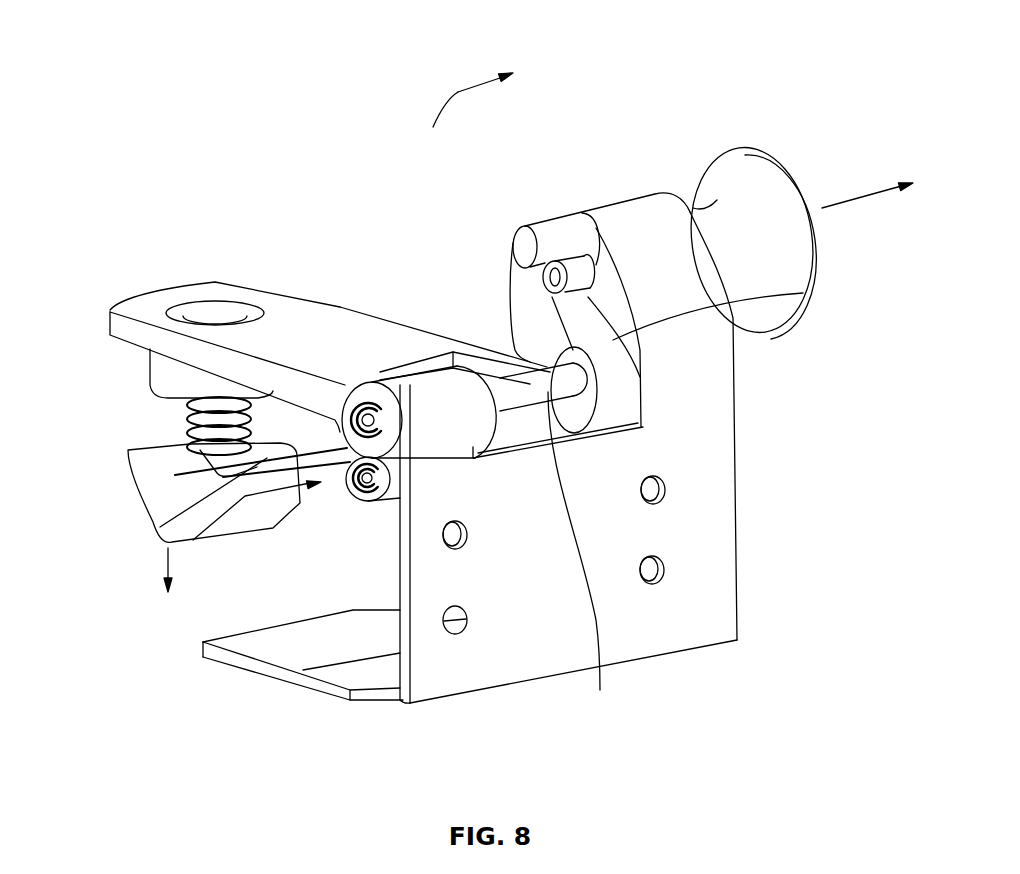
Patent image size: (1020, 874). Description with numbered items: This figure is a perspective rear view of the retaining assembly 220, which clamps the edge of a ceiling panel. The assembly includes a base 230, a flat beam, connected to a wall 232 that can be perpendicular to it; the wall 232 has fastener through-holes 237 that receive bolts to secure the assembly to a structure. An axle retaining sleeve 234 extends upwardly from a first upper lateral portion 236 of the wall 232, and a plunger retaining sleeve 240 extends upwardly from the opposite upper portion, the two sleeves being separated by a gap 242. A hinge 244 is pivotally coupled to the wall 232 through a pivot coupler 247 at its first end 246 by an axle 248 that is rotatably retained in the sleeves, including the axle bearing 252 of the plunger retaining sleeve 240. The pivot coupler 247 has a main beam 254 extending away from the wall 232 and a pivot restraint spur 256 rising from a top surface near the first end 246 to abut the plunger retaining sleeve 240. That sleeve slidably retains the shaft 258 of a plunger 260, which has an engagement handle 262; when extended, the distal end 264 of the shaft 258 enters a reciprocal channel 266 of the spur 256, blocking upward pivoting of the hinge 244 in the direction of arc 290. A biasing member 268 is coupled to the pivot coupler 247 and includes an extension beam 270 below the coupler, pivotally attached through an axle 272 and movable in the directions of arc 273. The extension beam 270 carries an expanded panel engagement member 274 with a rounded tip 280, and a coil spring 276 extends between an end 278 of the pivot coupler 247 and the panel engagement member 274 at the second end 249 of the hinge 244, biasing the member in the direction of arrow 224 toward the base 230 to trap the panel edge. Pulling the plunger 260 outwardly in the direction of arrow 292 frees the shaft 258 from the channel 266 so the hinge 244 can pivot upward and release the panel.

The retaining assembly 220 is at (123, 205).
The arrow 224 is at (163, 560).
The base 230 is at (252, 660).
The wall 232 is at (713, 512).
The axle retaining sleeve 234 is at (435, 380).
The first upper lateral portion 236 is at (403, 483).
The fastener through-holes 237 is at (666, 487).
The plunger retaining sleeve 240 is at (690, 343).
The gap 242 is at (509, 316).
The hinge 244 is at (360, 305).
The first end 246 is at (803, 294).
The pivot coupler 247 is at (313, 310).
The axle 248 is at (585, 556).
The second end 249 is at (125, 303).
The axle bearing 252 is at (340, 432).
The main beam 254 is at (200, 337).
The pivot restraint spur 256 is at (540, 223).
The shaft 258 is at (580, 258).
The plunger 260 is at (793, 182).
The engagement handle 262 is at (813, 248).
The distal end 264 is at (587, 265).
The reciprocal channel 266 is at (517, 230).
The biasing member 268 is at (177, 420).
The extension beam 270 is at (318, 458).
The axle 272 is at (362, 487).
The arc 273 is at (302, 487).
The panel engagement member 274 is at (140, 503).
The spring 276 is at (143, 450).
The end 278 is at (152, 306).
The rounded tip 280 is at (150, 524).
The arc 290 is at (458, 92).
The arrow 292 is at (888, 192).